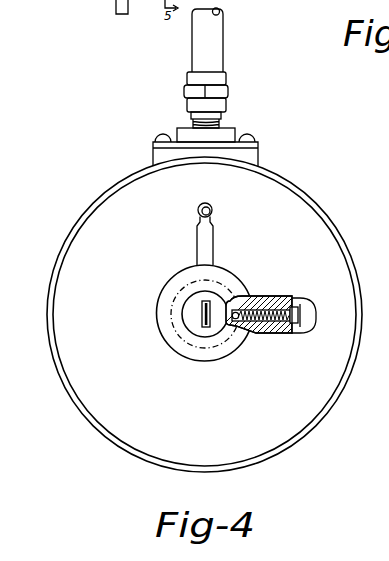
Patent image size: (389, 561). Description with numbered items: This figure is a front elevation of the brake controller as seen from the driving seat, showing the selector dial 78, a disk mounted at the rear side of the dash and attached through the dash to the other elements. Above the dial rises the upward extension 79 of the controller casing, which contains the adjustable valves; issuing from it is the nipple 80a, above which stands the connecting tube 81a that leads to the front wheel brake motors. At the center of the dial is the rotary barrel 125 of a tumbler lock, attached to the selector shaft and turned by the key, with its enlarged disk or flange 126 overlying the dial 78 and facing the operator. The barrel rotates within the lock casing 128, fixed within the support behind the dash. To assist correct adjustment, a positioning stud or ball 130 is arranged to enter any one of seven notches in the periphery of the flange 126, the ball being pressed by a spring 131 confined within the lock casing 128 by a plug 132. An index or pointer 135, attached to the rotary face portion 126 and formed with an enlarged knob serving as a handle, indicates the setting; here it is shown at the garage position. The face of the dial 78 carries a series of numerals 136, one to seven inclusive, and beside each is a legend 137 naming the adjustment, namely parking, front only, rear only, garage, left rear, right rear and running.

The selector dial 78 is at (288, 203).
The upward extension 79 is at (163, 155).
The nipple 80a is at (220, 119).
The connecting tube 81a is at (215, 53).
The rotary barrel 125 is at (190, 300).
The enlarged disk or flange 126 is at (163, 310).
The lock casing 128 is at (270, 322).
The positioning stud or ball 130 is at (246, 297).
The spring 131 is at (285, 286).
The plug 132 is at (315, 290).
The index or pointer 135 is at (209, 203).
The numerals 136 is at (94, 221).
The legend 137 is at (117, 233).